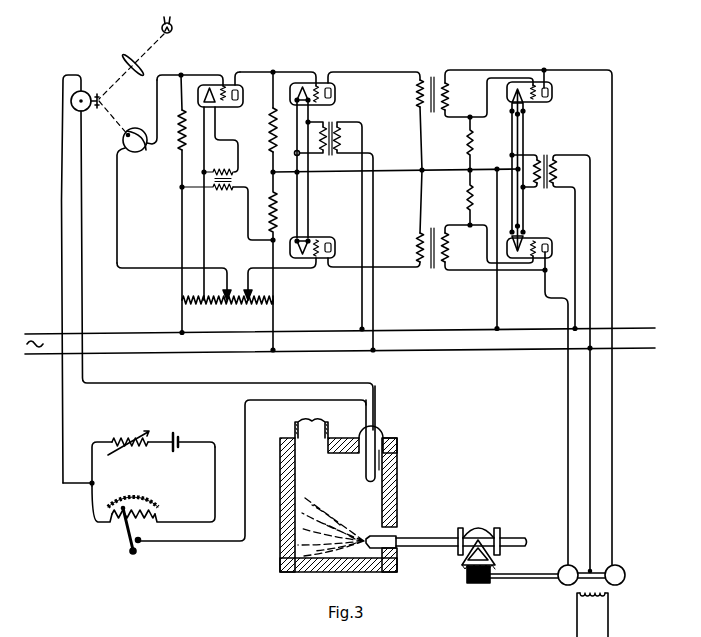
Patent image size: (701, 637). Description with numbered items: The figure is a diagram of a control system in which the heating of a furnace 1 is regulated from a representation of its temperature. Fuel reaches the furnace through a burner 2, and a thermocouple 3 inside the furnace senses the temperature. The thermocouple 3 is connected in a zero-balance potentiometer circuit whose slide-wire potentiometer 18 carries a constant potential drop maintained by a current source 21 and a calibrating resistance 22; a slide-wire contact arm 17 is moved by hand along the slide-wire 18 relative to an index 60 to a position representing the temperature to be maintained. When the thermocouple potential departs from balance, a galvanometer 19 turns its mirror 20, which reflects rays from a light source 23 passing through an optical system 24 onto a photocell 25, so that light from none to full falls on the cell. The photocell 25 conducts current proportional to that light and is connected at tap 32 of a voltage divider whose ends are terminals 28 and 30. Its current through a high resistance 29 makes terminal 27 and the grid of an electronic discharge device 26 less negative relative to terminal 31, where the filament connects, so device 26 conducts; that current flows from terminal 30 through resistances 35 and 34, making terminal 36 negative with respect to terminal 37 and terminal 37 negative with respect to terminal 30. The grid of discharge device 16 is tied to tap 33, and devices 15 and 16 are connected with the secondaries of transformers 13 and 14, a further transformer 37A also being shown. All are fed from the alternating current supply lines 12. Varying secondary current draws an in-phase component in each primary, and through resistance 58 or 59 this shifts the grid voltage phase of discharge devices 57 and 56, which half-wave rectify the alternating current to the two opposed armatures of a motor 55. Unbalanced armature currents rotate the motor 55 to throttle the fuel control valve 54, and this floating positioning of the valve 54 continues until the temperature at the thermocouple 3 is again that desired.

The furnace 1 is at (279, 502).
The burner 2 is at (402, 538).
The thermocouple 3 is at (378, 465).
The alternating current power source 12 is at (307, 350).
The transformer 13 is at (503, 316).
The transformer 14 is at (471, 247).
The electronic discharge device 15 is at (336, 96).
The electronic discharge device 16 is at (316, 237).
The slide-wire contact arm 17 is at (127, 530).
The slide-wire potentiometer 18 is at (150, 520).
The galvanometer 19 is at (82, 91).
The mirror 20 is at (99, 95).
The current source 21 is at (181, 432).
The calibrating resistance 22 is at (106, 452).
The light source 23 is at (173, 25).
The optical system 24 is at (142, 63).
The photocell 25 is at (141, 151).
The electronic discharge device 26 is at (240, 108).
The terminal 27 is at (183, 74).
The terminal 28 is at (181, 302).
The resistance 29 is at (173, 187).
The voltage divider terminal 30 is at (274, 303).
The terminal 31 is at (205, 303).
The voltage divider tap 32 is at (226, 305).
The voltage divider tap 33 is at (248, 305).
The resistance 34 is at (269, 132).
The resistance 35 is at (263, 262).
The terminal 36 is at (274, 71).
The terminal 37 is at (271, 172).
The transformer 37A is at (298, 172).
The fuel control valve 54 is at (508, 542).
The motor 55 is at (609, 600).
The electronic discharge device 56 is at (535, 238).
The electronic discharge device 57 is at (538, 103).
The resistance 58 is at (460, 144).
The resistance 59 is at (460, 198).
The index 60 is at (136, 499).